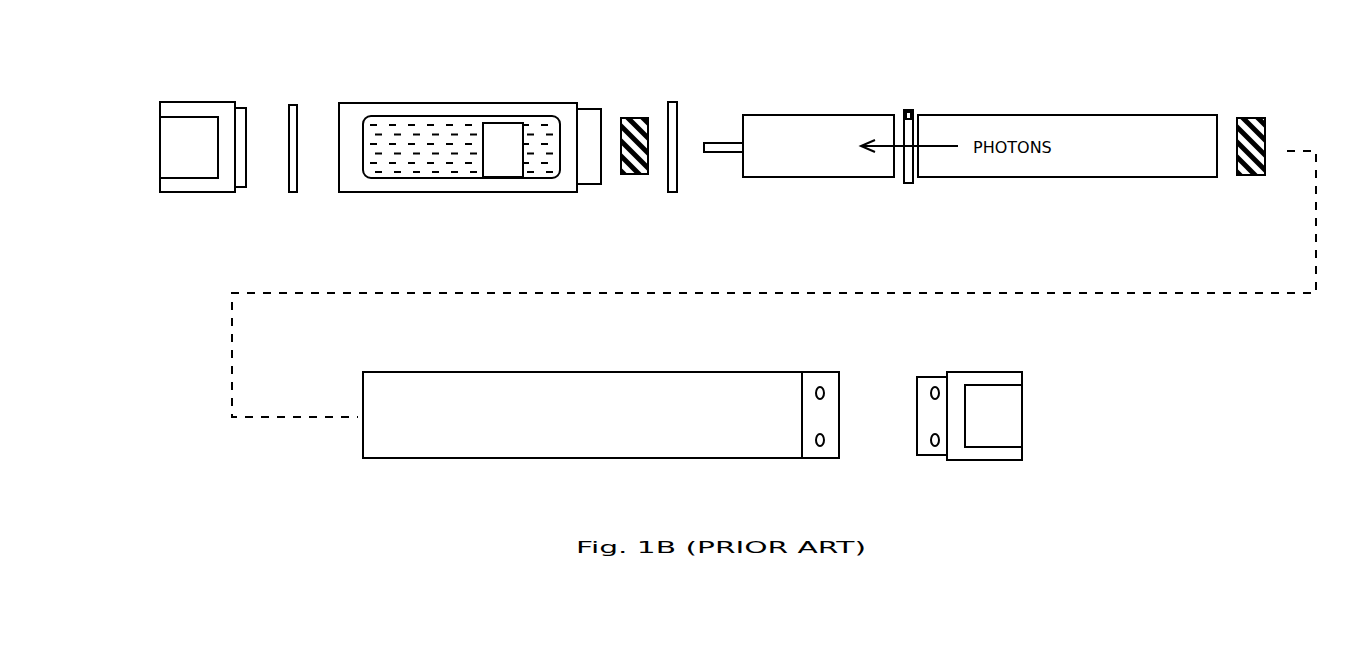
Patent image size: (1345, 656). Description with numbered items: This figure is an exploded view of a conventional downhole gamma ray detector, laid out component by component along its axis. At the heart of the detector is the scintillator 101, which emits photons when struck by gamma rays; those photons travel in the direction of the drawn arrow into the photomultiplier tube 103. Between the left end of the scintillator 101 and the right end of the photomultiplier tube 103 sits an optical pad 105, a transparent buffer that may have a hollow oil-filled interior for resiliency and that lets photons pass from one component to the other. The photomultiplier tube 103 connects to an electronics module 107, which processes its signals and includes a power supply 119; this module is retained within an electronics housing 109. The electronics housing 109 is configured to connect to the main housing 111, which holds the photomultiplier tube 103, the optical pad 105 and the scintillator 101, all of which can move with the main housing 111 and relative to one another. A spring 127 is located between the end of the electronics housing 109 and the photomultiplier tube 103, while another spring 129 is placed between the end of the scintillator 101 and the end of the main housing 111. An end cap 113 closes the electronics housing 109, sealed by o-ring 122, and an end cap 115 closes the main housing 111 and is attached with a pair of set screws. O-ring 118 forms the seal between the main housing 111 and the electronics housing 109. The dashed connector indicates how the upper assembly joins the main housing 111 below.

The scintillator 101 is at (1083, 127).
The photomultiplier tube 103 is at (803, 173).
The optical pad 105 is at (907, 118).
The electronics module 107 is at (530, 165).
The electronics housing 109 is at (427, 184).
The main housing 111 is at (510, 442).
The end cap 113 is at (233, 102).
The end cap 115 is at (960, 453).
The O-ring 118 is at (680, 108).
The power supply 119 is at (493, 133).
The o-ring 122 is at (291, 181).
The spring 127 is at (635, 118).
The spring 129 is at (1250, 173).